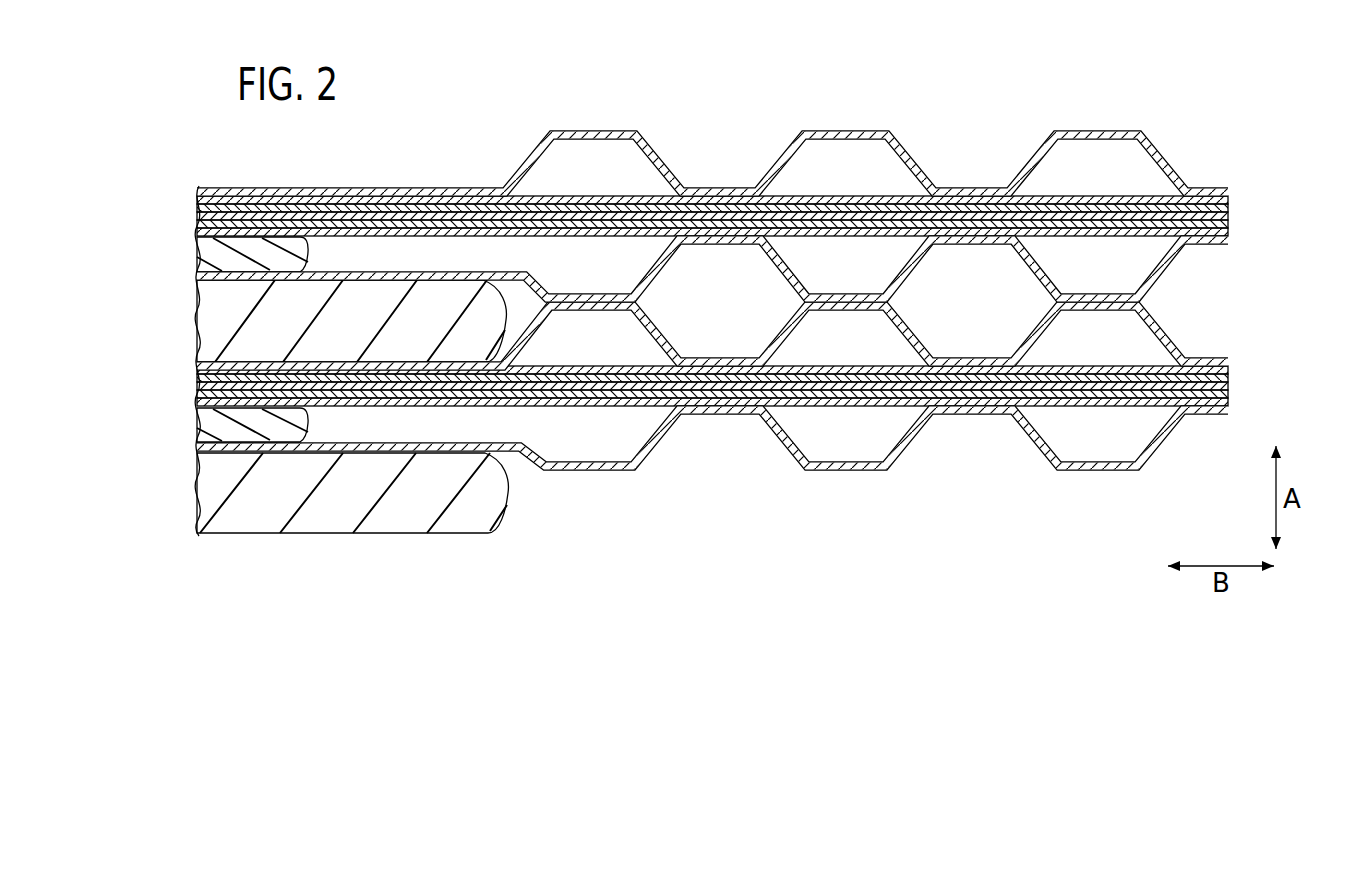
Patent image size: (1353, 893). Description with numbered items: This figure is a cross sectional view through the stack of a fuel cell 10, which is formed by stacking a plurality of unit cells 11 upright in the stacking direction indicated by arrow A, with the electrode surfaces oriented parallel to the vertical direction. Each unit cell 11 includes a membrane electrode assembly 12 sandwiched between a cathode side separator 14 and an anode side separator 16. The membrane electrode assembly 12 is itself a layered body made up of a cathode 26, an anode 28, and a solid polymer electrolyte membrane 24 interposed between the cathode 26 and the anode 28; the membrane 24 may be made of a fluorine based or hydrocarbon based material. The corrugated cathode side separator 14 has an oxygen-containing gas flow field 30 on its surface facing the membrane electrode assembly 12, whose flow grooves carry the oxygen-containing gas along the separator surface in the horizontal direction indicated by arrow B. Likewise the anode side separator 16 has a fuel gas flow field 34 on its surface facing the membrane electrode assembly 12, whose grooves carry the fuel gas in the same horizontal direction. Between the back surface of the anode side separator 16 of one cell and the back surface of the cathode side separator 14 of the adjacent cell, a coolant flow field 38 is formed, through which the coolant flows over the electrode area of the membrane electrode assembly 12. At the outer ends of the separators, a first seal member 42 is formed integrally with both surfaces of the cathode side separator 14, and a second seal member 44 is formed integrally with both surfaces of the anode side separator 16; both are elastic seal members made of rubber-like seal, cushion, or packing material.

The fuel cell 10 is at (698, 97).
The unit cell 11 is at (1097, 50).
The membrane electrode assembly 12 is at (912, 91).
The cathode side separator 14 is at (849, 126).
The anode side separator 16 is at (1055, 272).
The solid polymer electrolyte membrane 24 is at (968, 214).
The cathode 26 is at (903, 198).
The anode 28 is at (1002, 228).
The oxygen-containing gas flow field 30 is at (845, 249).
The fuel gas flow field 34 is at (845, 348).
The coolant flow field 38 is at (831, 301).
The first seal member 42 is at (200, 418).
The second seal member 44 is at (203, 318).